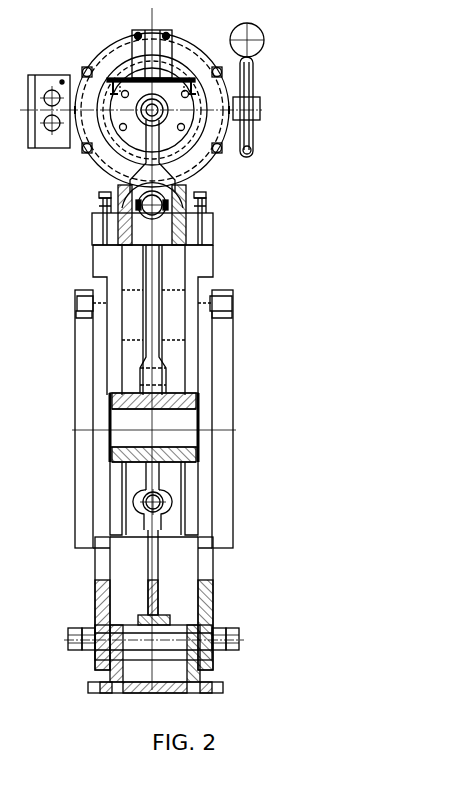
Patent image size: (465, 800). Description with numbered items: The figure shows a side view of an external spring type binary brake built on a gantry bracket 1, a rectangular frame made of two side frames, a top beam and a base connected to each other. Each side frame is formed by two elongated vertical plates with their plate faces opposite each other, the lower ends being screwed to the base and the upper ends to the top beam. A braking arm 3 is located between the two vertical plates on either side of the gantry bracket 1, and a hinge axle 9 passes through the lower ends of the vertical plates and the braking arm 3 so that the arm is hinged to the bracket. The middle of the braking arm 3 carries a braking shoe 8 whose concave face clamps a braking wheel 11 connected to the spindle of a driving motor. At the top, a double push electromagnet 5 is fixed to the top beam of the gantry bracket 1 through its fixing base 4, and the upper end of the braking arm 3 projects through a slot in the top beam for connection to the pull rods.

The gantry bracket 1 is at (205, 578).
The braking arm 3 is at (155, 352).
The fixing base 4 is at (185, 190).
The double push electromagnet 5 is at (215, 80).
The braking shoe 8 is at (178, 515).
The hinge axle 9 is at (195, 620).
The braking wheel 11 is at (225, 478).